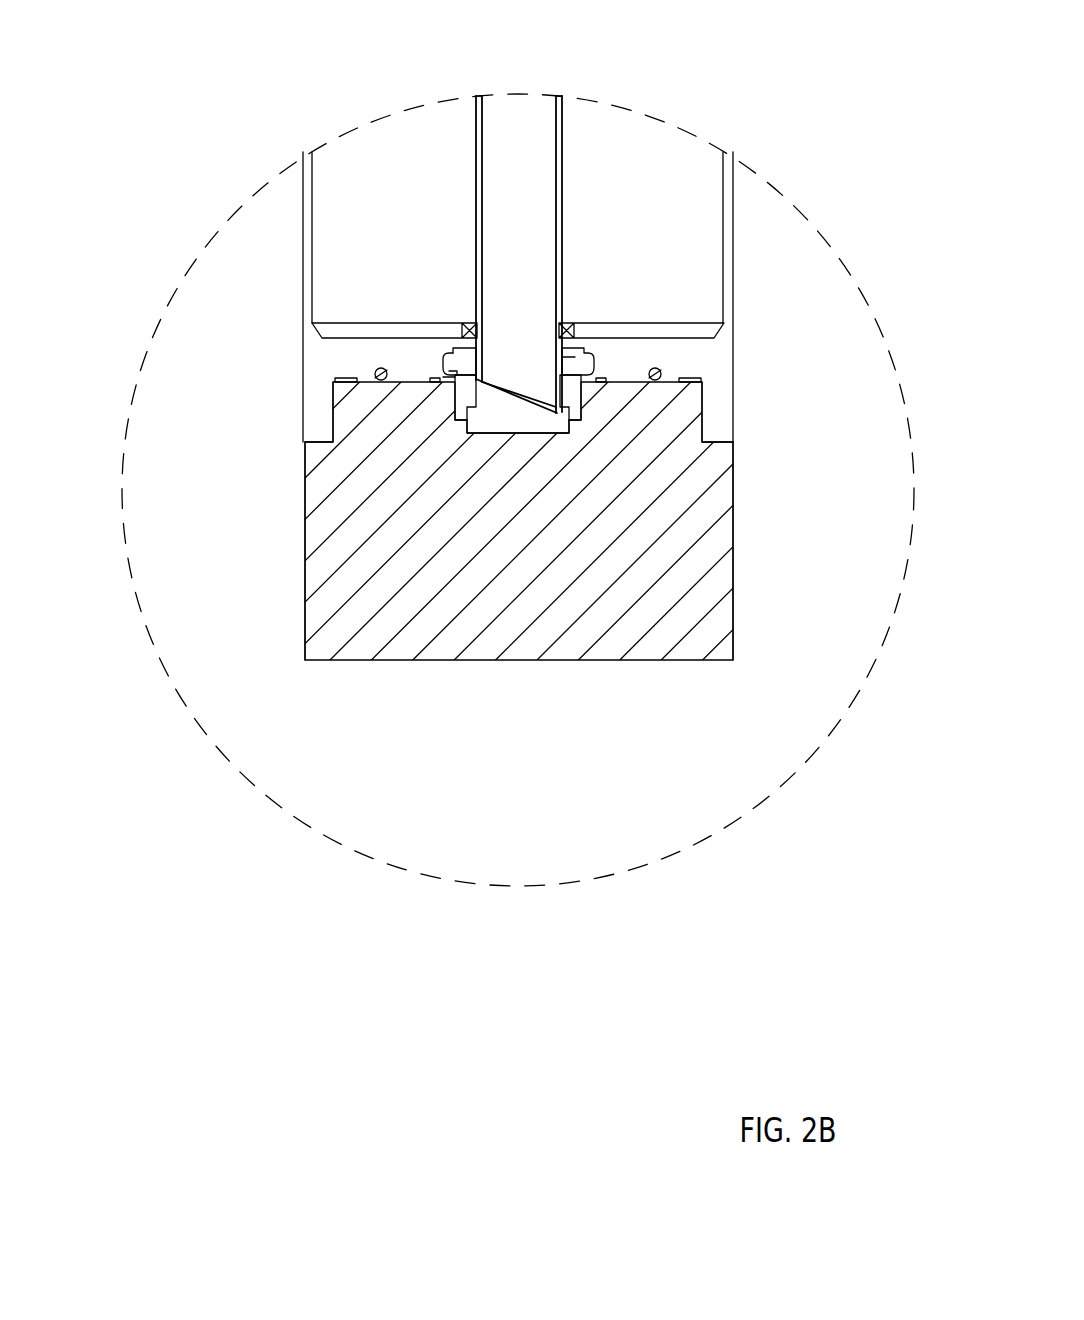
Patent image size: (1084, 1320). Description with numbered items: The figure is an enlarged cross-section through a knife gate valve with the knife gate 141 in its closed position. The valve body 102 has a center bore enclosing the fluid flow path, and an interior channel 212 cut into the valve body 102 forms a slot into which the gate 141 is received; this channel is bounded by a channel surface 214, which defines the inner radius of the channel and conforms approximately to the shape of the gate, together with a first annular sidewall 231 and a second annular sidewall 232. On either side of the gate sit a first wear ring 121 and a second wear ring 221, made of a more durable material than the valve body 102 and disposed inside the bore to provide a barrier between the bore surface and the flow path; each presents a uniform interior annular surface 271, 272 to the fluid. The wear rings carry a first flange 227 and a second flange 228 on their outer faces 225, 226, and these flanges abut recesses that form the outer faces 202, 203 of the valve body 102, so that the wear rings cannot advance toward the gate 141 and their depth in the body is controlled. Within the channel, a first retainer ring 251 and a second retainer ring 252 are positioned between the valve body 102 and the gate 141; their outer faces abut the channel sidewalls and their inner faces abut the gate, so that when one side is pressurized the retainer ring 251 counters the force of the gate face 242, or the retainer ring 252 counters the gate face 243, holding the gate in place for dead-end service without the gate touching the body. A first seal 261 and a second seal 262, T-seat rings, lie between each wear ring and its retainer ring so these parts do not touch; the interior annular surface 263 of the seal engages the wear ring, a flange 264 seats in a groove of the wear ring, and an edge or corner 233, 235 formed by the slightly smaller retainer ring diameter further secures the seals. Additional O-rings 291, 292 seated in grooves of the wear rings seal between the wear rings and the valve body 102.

The valve body 102 is at (678, 580).
The first wear ring 121 is at (447, 377).
The knife gate 141 is at (556, 369).
The first outer face of the valve body 202 is at (301, 599).
The second outer face of the valve body 203 is at (735, 540).
The interior channel 212 is at (548, 422).
The channel surface 214 is at (492, 424).
The second wear ring 221 is at (643, 353).
The outer face of the first wear ring 225 is at (300, 413).
The outer face of the second wear ring 226 is at (735, 384).
The first flange 227 is at (318, 424).
The second flange 228 is at (718, 412).
The first annular sidewall 231 is at (455, 398).
The second annular sidewall 232 is at (583, 392).
The first edge or corner 233 is at (368, 353).
The second edge or corner 235 is at (562, 357).
The first gate face 242 is at (475, 187).
The second gate face 243 is at (562, 187).
The first retainer ring 251 is at (455, 403).
The second retainer ring 252 is at (570, 398).
The first seal 261 is at (415, 305).
The second seal 262 is at (570, 363).
The interior annular surface of the seal 263 is at (449, 349).
The flange of the seal 264 is at (437, 367).
The interior annular surface of the first wear ring 271 is at (322, 335).
The interior annular surface of the second wear ring 272 is at (688, 334).
The first O-ring 291 is at (372, 373).
The second O-ring 292 is at (662, 376).